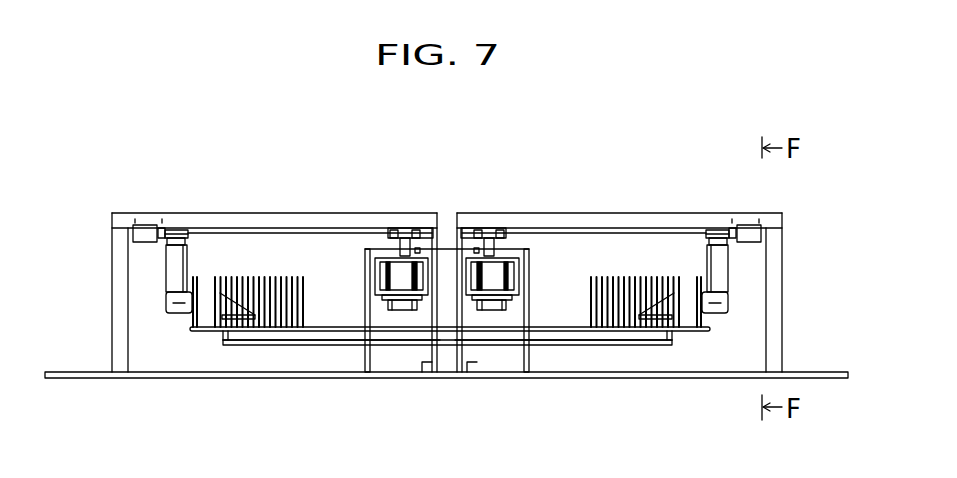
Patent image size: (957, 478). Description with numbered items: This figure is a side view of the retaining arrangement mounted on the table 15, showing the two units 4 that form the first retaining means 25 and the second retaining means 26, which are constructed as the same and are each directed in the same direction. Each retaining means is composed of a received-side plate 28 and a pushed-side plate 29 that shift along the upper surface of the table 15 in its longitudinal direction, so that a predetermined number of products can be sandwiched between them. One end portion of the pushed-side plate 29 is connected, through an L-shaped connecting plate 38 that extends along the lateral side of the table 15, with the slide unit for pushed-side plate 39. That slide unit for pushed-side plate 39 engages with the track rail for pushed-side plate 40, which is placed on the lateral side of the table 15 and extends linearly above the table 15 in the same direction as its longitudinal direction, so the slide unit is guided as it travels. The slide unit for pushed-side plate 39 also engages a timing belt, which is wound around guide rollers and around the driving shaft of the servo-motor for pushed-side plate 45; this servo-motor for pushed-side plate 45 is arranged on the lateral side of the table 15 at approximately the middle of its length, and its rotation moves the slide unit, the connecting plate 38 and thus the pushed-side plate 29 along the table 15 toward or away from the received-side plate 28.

The heat exchange unit 4 is at (459, 396).
The first retaining means 25 is at (203, 343).
The second retaining means 26 is at (692, 343).
The table 15 is at (565, 332).
The received-side plate 28 is at (221, 293).
The pushed-side plate 29 is at (193, 287).
The L-shaped connecting plate 38 is at (173, 277).
The slide unit for pushed-side plate 39 is at (176, 230).
The track rail for pushed-side plate 40 is at (315, 218).
The servo-motor for pushed-side plate 45 is at (377, 262).